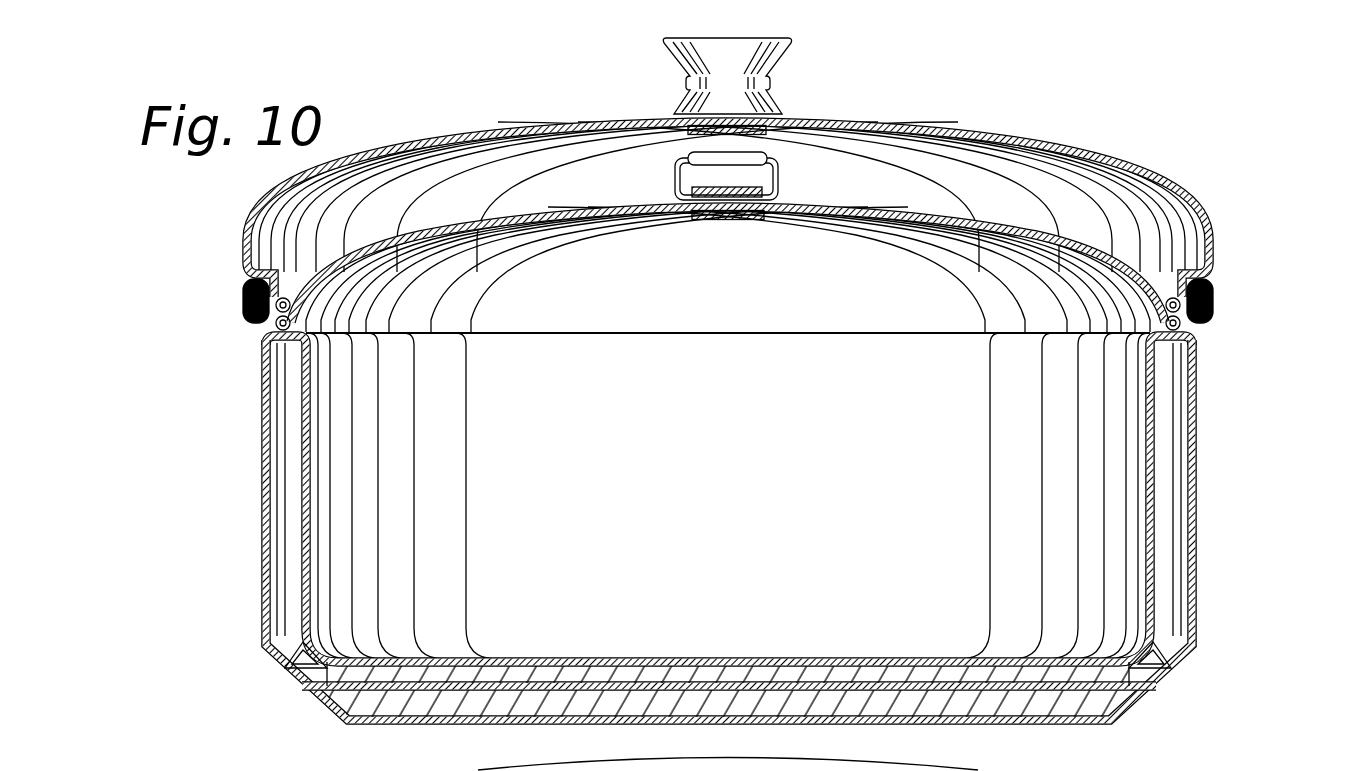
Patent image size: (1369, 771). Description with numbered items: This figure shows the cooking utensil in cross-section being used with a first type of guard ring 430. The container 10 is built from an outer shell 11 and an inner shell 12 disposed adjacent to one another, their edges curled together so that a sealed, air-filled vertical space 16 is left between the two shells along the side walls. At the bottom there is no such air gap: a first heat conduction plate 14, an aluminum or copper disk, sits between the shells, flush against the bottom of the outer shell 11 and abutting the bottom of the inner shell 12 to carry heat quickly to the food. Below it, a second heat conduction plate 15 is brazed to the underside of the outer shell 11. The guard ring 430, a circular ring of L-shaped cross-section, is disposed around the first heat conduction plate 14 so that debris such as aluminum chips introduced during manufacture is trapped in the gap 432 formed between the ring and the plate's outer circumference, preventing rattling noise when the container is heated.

The container 10 is at (1207, 463).
The outer shell 11 is at (1198, 515).
The inner shell 12 is at (1150, 552).
The first heat conduction plate 14 is at (995, 664).
The second heat conduction plate 15 is at (1078, 703).
The vertical space 16 is at (290, 520).
The guard ring 430 is at (1155, 650).
The gap 432 is at (308, 690).